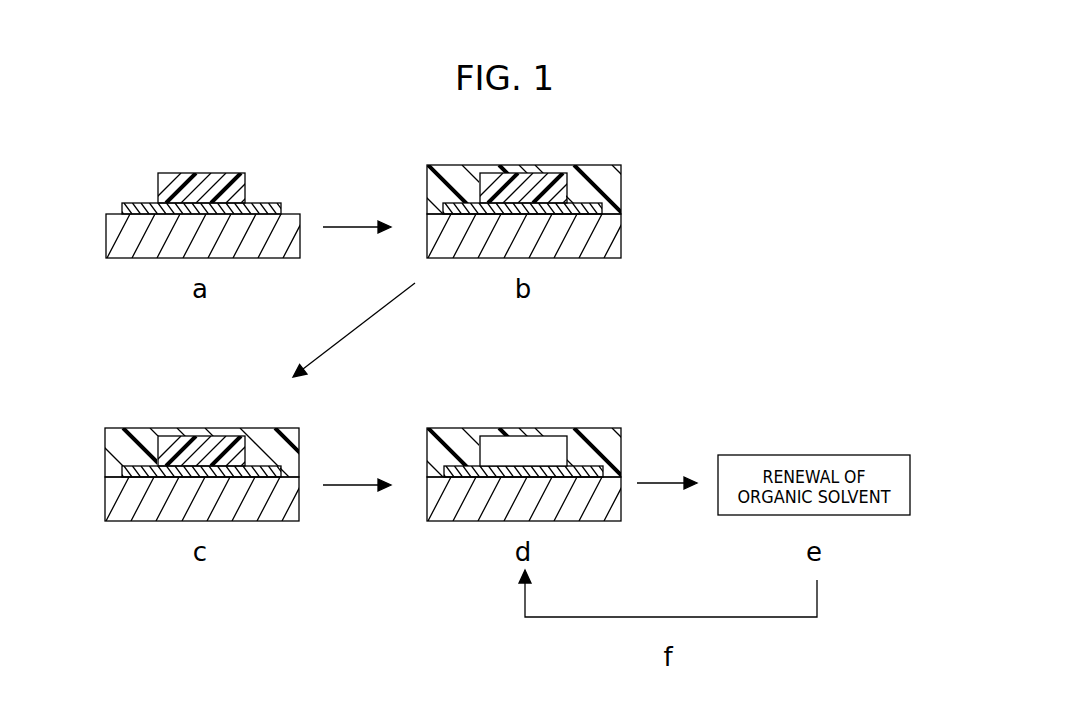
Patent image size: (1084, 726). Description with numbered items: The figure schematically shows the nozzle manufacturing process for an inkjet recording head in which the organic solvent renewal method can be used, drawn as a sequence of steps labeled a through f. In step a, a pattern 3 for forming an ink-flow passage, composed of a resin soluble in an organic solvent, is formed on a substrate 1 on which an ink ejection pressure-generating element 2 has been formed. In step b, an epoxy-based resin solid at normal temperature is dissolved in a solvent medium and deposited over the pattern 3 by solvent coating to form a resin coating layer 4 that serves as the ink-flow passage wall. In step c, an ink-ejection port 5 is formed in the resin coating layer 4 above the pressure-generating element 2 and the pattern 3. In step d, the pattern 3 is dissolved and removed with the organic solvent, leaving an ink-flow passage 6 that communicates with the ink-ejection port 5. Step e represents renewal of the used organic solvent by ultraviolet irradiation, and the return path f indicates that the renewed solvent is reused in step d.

The substrate 1 is at (114, 214).
The ink ejection pressure-generating element 2 is at (267, 203).
The pattern for forming an ink-flow passage 3 is at (210, 172).
The resin coating layer 4 is at (603, 172).
The ink-ejection port 5 is at (200, 435).
The ink-flow passage 6 is at (488, 450).